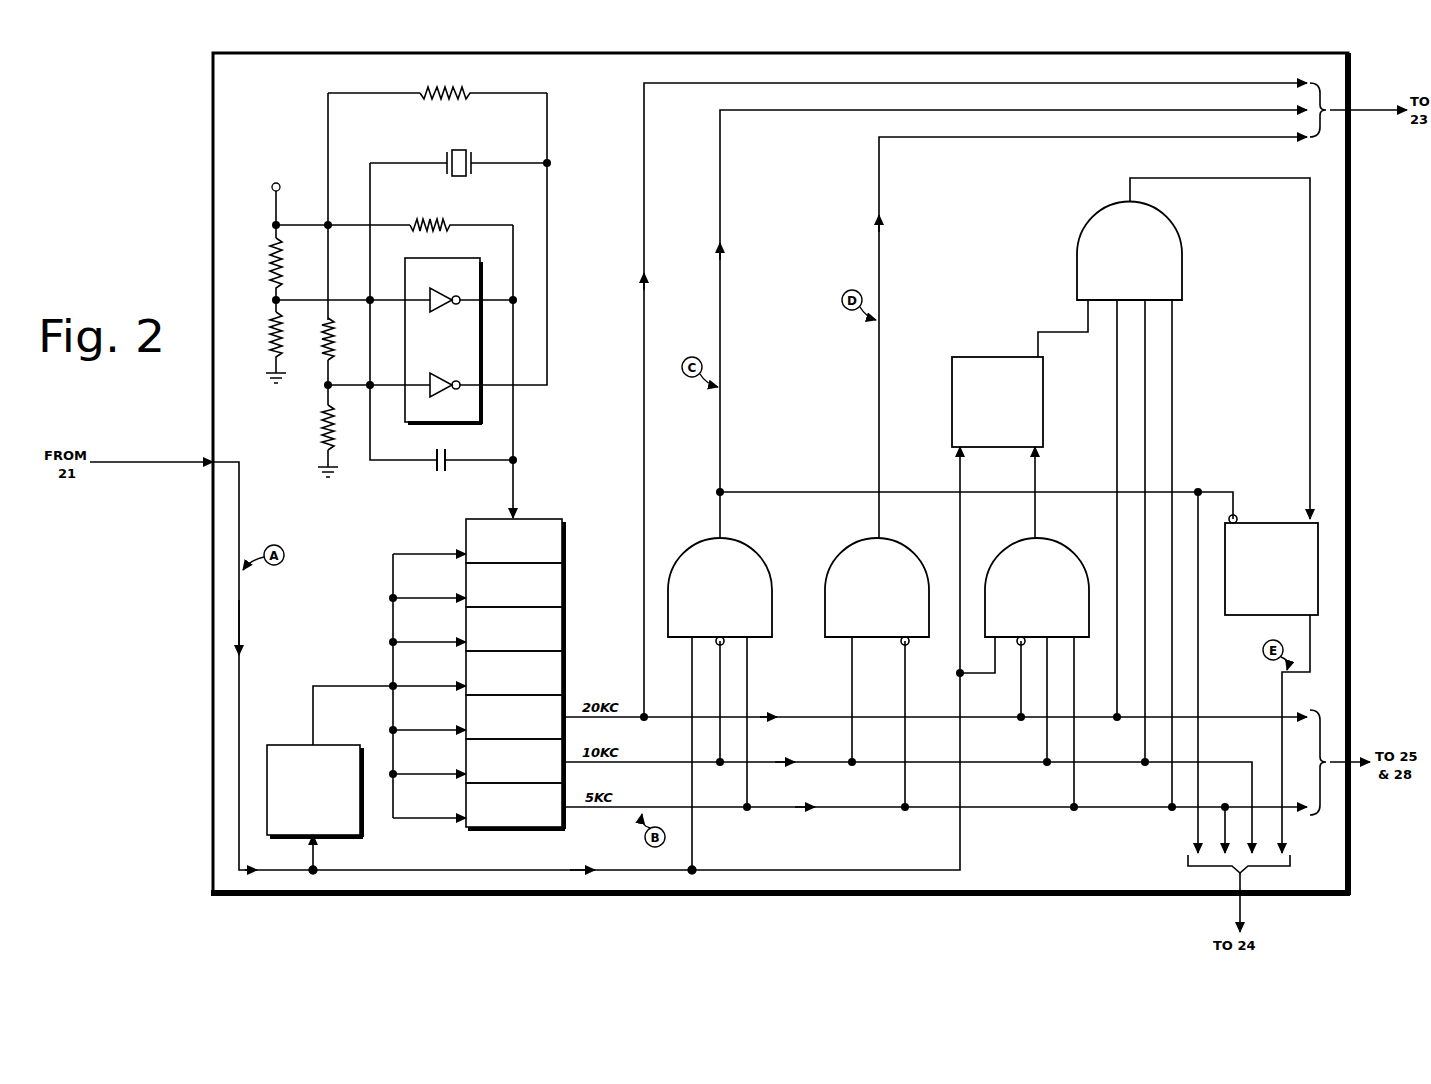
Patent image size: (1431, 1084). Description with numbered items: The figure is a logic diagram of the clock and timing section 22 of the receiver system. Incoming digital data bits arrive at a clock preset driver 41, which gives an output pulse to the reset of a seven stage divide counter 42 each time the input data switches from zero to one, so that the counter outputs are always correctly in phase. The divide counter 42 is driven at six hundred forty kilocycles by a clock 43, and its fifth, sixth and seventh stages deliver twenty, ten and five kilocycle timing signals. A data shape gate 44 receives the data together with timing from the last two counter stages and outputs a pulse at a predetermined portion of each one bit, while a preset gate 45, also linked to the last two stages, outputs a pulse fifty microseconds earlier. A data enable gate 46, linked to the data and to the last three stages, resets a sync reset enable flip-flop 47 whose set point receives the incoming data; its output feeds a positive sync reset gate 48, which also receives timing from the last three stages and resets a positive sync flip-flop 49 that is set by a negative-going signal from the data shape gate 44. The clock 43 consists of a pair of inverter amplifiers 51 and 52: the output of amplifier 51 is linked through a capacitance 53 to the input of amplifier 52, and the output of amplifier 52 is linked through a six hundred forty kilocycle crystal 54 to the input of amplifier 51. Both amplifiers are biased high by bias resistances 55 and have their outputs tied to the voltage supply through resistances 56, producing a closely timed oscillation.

The clock and timing section 22 is at (211, 77).
The clock preset driver 41 is at (280, 745).
The seven stage divide counter 42 is at (566, 520).
The clock 43 is at (409, 291).
The data shape gate 44 is at (694, 541).
The preset gate 45 is at (845, 543).
The data enable gate 46 is at (1010, 543).
The sync reset enable flip-flop 47 is at (994, 357).
The positive sync reset gate 48 is at (1093, 205).
The positive sync flip-flop 49 is at (1265, 523).
The inverter amplifier 51 is at (438, 288).
The inverter amplifier 52 is at (438, 374).
The capacitance 53 is at (450, 458).
The crystal 54 is at (465, 176).
The bias resistances 55 is at (268, 255).
The resistances 56 is at (450, 86).